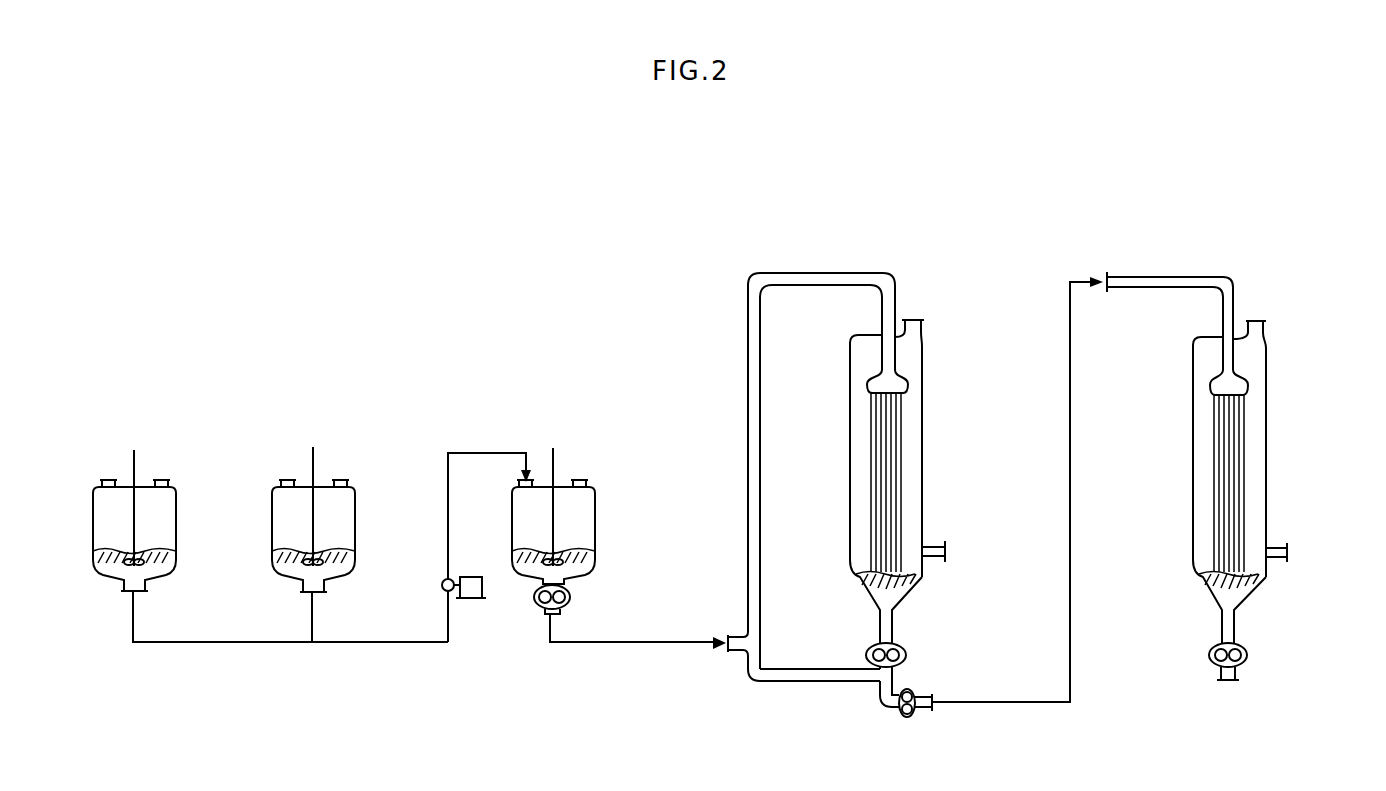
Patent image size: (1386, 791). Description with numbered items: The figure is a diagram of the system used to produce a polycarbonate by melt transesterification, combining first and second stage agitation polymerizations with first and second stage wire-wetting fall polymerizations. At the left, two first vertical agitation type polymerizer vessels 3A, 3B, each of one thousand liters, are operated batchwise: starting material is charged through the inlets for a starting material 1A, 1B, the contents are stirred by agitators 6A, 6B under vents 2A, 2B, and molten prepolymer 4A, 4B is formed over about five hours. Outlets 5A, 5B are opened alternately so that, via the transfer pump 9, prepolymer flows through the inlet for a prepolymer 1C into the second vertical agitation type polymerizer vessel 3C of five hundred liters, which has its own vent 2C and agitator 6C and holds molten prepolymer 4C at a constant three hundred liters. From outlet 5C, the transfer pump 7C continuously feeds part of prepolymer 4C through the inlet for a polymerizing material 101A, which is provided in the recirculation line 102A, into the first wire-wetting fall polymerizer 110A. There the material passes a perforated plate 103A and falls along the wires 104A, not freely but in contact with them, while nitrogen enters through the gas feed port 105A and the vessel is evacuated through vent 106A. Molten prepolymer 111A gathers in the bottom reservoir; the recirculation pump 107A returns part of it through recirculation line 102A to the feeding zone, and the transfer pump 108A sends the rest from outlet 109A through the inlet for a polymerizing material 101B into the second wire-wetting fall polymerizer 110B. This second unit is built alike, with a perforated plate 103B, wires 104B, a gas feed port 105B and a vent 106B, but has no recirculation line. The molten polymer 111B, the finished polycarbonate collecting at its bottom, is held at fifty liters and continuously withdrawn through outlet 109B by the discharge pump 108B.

The inlet for a starting material 1A is at (108, 478).
The vent 2A is at (163, 478).
The first vertical agitation type polymerizer vessel (A) 3A is at (178, 517).
The molten prepolymer 4A is at (98, 562).
The outlet 5A is at (130, 592).
The agitator 6A is at (134, 455).
The inlet for a starting material 1B is at (285, 480).
The vent 2B is at (337, 480).
The first vertical agitation type polymerizer vessel (B) 3B is at (353, 518).
The molten prepolymer 4B is at (290, 562).
The outlet 5B is at (317, 593).
The agitator 6B is at (313, 460).
The inlet for a prepolymer 1C is at (533, 478).
The vent 2C is at (577, 480).
The second vertical agitation type polymerizer vessel (C) 3C is at (594, 513).
The molten prepolymer 4C is at (594, 560).
The outlet 5C is at (547, 614).
The agitator 6C is at (553, 462).
The transfer pump 7C is at (570, 598).
The transfer pump 9 is at (472, 598).
The inlet for a polymerizing material 101A is at (733, 651).
The recirculation line 102A is at (748, 367).
The perforated plate 103A is at (895, 390).
The wire 104A is at (902, 460).
The gas feed port 105A is at (935, 545).
The vent 106A is at (915, 318).
The recirculation pump 107A is at (903, 643).
The transfer pump 108A is at (913, 688).
The outlet 109A is at (927, 708).
The first wire-wetting fall polymerizer 110A is at (848, 463).
The molten prepolymer 111A is at (873, 578).
The inlet for a polymerizing material 101B is at (1125, 275).
The perforated plate 103B is at (1238, 390).
The wire 104B is at (1243, 462).
The gas feed port 105B is at (1270, 545).
The vent 106B is at (1257, 319).
The discharge pump 108B is at (1243, 647).
The outlet 109B is at (1225, 682).
The second wire-wetting fall polymerizer 110B is at (1192, 465).
The molten polymer 111B is at (1217, 578).